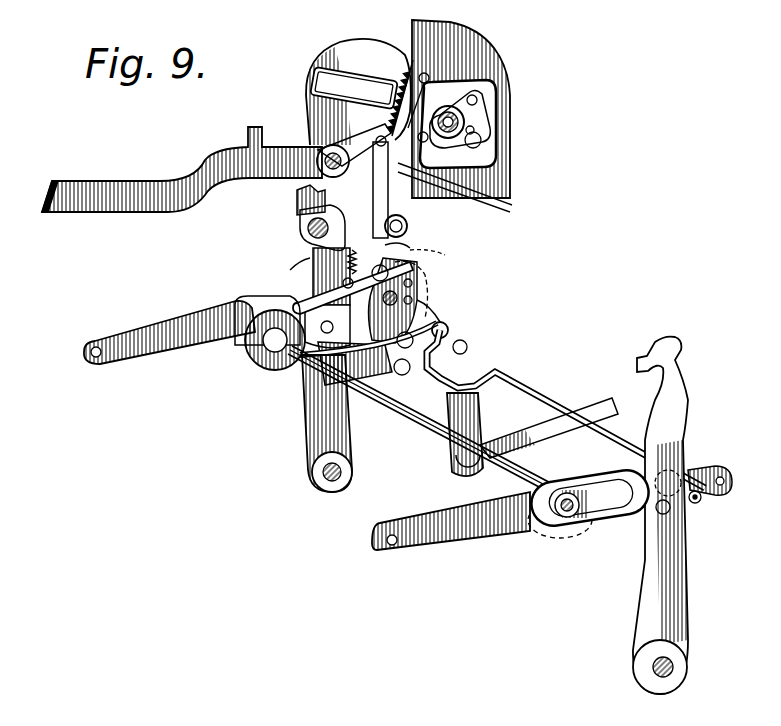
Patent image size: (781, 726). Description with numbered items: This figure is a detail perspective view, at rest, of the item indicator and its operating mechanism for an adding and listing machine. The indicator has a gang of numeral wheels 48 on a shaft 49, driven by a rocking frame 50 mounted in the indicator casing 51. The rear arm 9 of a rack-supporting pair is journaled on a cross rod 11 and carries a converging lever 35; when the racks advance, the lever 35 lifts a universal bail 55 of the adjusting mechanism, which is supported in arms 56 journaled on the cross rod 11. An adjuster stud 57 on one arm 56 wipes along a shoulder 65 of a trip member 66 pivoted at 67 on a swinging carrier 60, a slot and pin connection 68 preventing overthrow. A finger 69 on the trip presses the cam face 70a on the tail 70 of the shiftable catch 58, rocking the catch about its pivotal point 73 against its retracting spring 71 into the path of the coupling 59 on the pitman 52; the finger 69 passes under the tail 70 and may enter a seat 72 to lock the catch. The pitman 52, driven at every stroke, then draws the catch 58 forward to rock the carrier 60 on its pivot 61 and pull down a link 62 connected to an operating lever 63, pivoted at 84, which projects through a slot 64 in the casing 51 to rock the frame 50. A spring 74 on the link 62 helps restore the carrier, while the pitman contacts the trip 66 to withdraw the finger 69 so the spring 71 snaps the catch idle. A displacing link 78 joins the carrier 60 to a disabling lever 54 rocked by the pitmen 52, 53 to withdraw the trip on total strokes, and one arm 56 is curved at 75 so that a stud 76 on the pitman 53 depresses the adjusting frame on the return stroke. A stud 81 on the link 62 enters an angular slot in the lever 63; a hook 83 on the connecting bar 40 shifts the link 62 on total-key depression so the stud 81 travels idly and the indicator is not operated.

The rear arm 9 is at (480, 408).
The cross rod 11 is at (404, 430).
The converging lever 35 is at (535, 450).
The connecting bar 40 is at (110, 183).
The numeral wheels 48 is at (318, 76).
The shaft 49 is at (463, 120).
The rocking frame 50 is at (472, 132).
The indicator casing 51 is at (512, 182).
The pitman 52 is at (145, 358).
The pitman 53 is at (467, 545).
The disabling lever 54 is at (303, 440).
The universal bail 55 is at (548, 393).
The arm 56 is at (272, 378).
The adjuster stud 57 is at (450, 332).
The shiftable catch 58 is at (310, 290).
The coupling 59 is at (334, 310).
The swinging carrier 60 is at (408, 246).
The pivot 61 is at (305, 232).
The link 62 is at (374, 206).
The operating lever 63 is at (348, 145).
The slot 64 is at (454, 131).
The shoulder 65 is at (420, 320).
The trip member 66 is at (410, 298).
The pivot 67 is at (443, 363).
The slot and pin connection 68 is at (413, 282).
The finger 69 is at (415, 266).
The tail 70 is at (440, 258).
The cam face 70a is at (440, 250).
The retracting spring 71 is at (268, 258).
The seat 72 is at (386, 229).
The pivotal point 73 is at (378, 328).
The spring 74 is at (430, 80).
The curved portion 75 is at (682, 478).
The stud 76 is at (697, 503).
The displacing link 78 is at (386, 362).
The stud 81 is at (410, 56).
The hook 83 is at (514, 208).
The pivot 84 is at (320, 150).